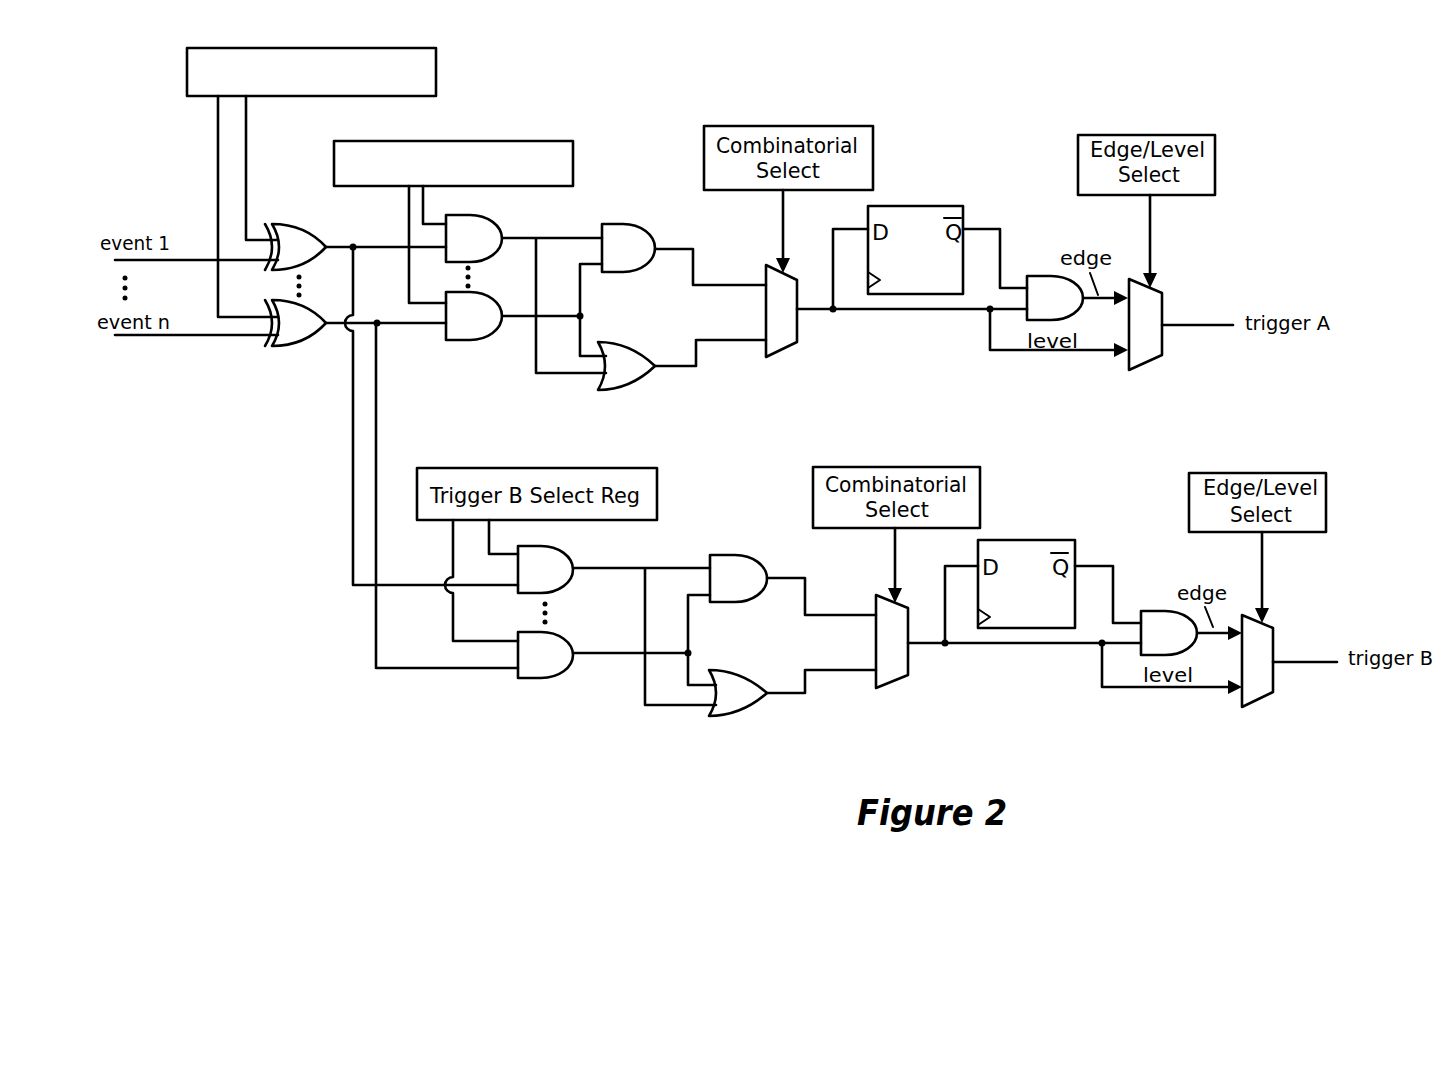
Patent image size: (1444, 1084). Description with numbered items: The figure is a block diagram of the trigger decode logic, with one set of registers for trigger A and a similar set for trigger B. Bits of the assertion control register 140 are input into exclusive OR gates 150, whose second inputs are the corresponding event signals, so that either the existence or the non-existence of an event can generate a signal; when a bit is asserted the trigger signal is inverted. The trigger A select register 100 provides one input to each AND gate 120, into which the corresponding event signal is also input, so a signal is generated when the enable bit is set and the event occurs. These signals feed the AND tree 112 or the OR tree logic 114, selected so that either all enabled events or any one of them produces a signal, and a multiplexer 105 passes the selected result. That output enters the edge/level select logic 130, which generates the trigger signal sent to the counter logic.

The assertion control register 140 is at (187, 78).
The trigger A select register 100 is at (335, 163).
The exclusive OR gates 150 is at (309, 229).
The AND gate 120 is at (487, 328).
The AND tree 112 is at (630, 224).
The OR tree logic 114 is at (637, 380).
The combinatorial select multiplexer 105 is at (777, 350).
The edge/level select logic 130 is at (980, 374).